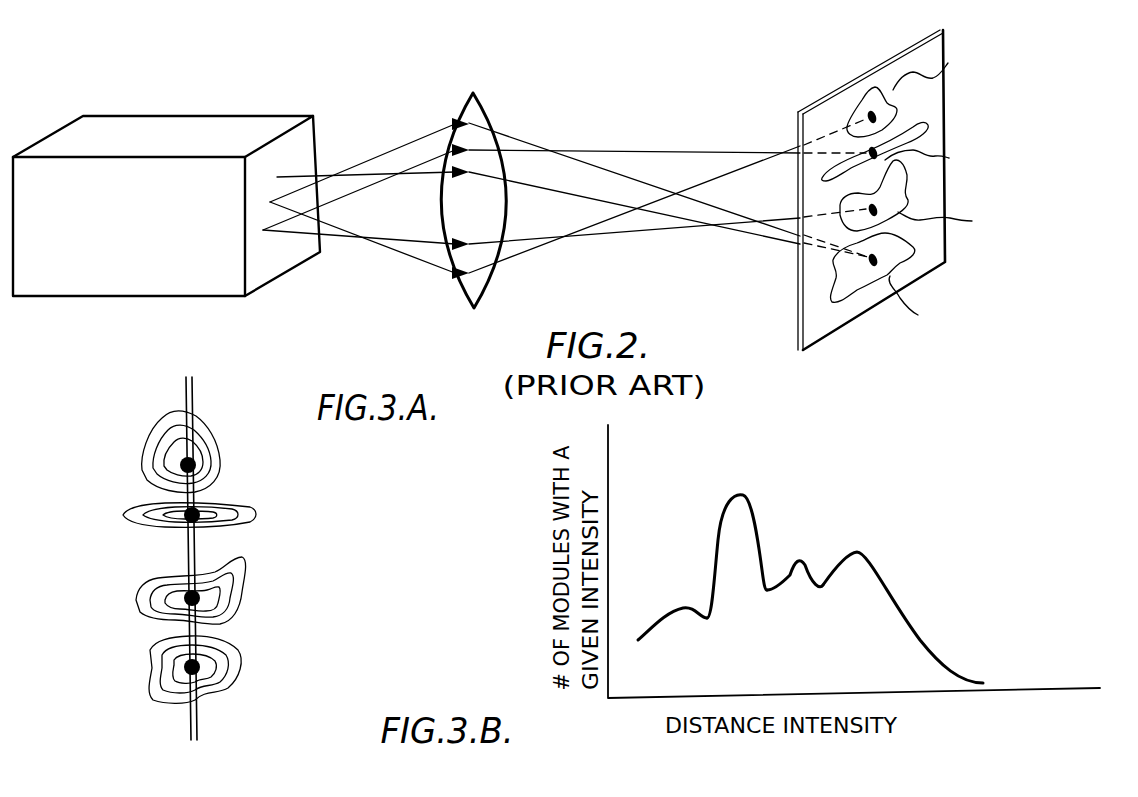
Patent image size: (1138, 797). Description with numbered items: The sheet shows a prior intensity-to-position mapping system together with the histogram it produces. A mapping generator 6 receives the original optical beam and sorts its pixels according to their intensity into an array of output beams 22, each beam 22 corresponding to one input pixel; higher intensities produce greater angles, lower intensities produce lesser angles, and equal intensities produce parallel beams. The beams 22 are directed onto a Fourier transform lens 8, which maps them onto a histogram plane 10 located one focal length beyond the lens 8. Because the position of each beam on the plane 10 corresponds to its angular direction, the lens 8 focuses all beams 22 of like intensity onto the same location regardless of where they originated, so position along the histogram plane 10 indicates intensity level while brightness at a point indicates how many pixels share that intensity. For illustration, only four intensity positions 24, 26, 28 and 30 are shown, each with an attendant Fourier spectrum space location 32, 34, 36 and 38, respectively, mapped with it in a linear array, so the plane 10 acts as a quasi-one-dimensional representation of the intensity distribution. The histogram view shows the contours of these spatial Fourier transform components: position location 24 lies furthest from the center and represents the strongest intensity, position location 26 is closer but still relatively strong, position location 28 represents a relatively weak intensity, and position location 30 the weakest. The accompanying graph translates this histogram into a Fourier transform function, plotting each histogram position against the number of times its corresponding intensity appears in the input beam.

In FIG. 2, the mapping generator 6 is at (212, 121).
In FIG. 2, the Fourier transform lens 8 is at (473, 93).
In FIG. 2, the histogram plane 10 is at (824, 93).
In FIG. 2, the output beams 22 is at (332, 168).
In FIG. 2, the intensity position 24 is at (910, 103).
In FIG. 3A, the intensity position 24 is at (198, 467).
In FIG. 3B, the intensity position 24 is at (860, 550).
In FIG. 2, the intensity position 26 is at (932, 138).
In FIG. 3A, the intensity position 26 is at (208, 518).
In FIG. 3B, the intensity position 26 is at (797, 557).
In FIG. 2, the intensity position 28 is at (918, 195).
In FIG. 3A, the intensity position 28 is at (200, 598).
In FIG. 3B, the intensity position 28 is at (743, 493).
In FIG. 2, the intensity position 30 is at (925, 247).
In FIG. 3A, the intensity position 30 is at (200, 663).
In FIG. 3B, the intensity position 30 is at (680, 606).
In FIG. 2, the Fourier spectrum space location 32 is at (948, 63).
In FIG. 3A, the Fourier spectrum space location 32 is at (185, 430).
In FIG. 2, the Fourier spectrum space location 34 is at (949, 158).
In FIG. 3A, the Fourier spectrum space location 34 is at (140, 527).
In FIG. 2, the Fourier spectrum space location 36 is at (972, 221).
In FIG. 3A, the Fourier spectrum space location 36 is at (140, 608).
In FIG. 2, the Fourier spectrum space location 38 is at (918, 315).
In FIG. 3A, the Fourier spectrum space location 38 is at (150, 672).